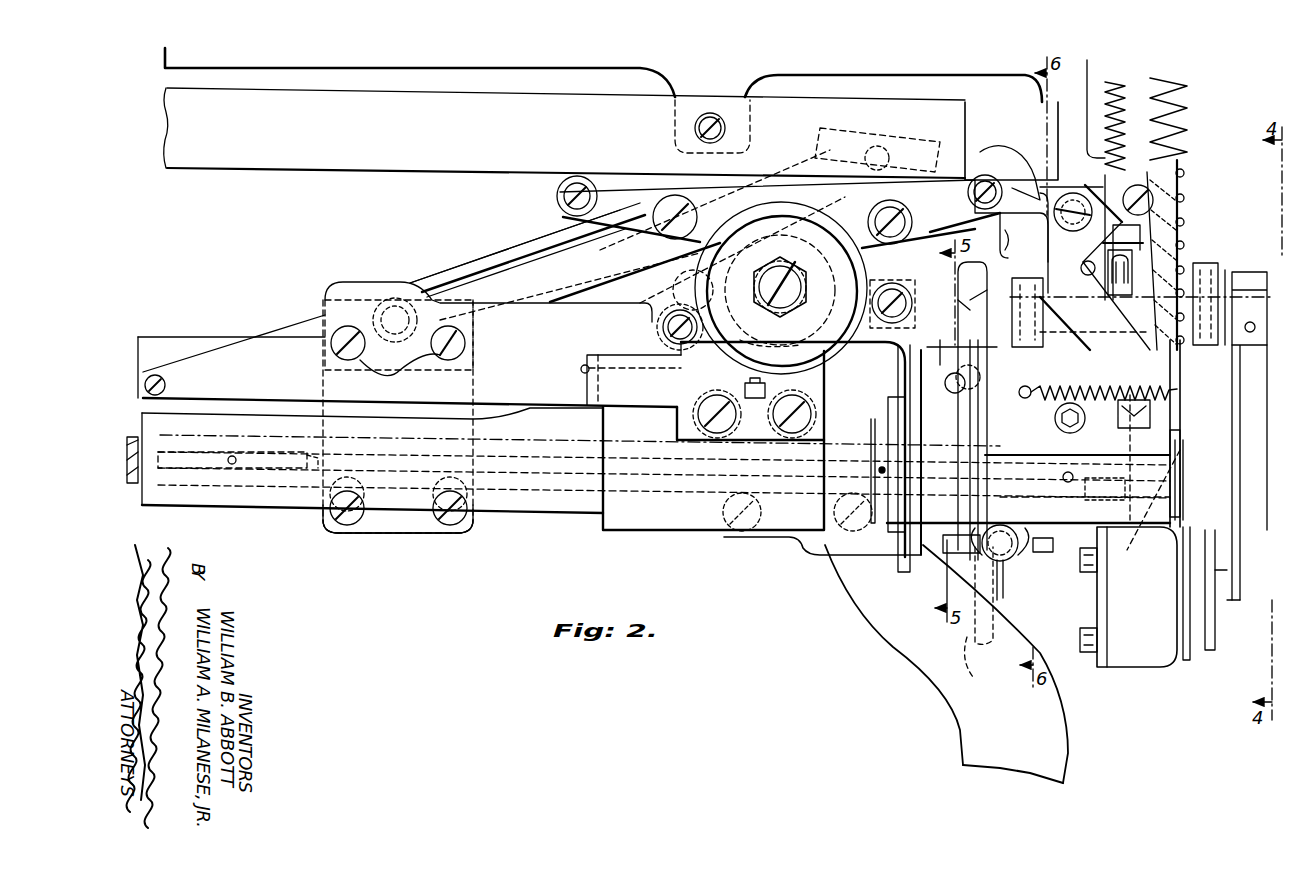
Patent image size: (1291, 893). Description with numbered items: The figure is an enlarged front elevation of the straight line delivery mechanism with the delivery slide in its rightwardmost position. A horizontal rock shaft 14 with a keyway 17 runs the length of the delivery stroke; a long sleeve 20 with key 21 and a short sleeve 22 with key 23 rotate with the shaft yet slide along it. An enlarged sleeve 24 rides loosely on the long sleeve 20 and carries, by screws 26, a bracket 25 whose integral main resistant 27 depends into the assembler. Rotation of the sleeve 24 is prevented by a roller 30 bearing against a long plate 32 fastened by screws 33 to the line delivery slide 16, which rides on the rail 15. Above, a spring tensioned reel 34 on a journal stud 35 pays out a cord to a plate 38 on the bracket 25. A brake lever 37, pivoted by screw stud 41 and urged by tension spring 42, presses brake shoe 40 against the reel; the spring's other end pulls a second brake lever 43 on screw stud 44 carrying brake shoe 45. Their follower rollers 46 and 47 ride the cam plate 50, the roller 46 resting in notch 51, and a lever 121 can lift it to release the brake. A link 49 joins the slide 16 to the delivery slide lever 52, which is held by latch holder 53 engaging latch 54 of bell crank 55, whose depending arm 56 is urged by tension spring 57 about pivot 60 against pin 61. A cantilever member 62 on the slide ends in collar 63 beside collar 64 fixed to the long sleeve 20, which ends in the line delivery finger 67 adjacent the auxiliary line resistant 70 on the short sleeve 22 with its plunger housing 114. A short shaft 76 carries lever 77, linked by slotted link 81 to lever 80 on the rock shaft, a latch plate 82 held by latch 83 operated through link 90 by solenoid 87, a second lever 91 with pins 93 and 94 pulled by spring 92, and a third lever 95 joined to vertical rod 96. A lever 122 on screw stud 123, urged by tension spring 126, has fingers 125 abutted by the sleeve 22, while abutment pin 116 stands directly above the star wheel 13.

The star wheel 13 is at (1006, 568).
The rock shaft 14 is at (142, 500).
The delivery slide rail 15 is at (188, 337).
The line delivery slide 16 is at (370, 280).
The keyway 17 is at (140, 433).
The long sleeve 20 is at (508, 505).
The key 21 is at (312, 475).
The short sleeve 22 is at (1067, 530).
The key 23 is at (1150, 530).
The enlarged sleeve 24 is at (686, 516).
The bracket 25 is at (652, 392).
The screws 26 is at (778, 430).
The main resistant 27 is at (905, 575).
The roller 30 is at (740, 392).
The long plate 32 is at (575, 333).
The screws 33 is at (430, 360).
The spring tensioned reel 34 is at (735, 220).
The journal stud 35 is at (771, 272).
The brake lever 37 is at (942, 190).
The plate 38 is at (592, 386).
The brake shoe 40 is at (662, 335).
The screw stud 41 is at (878, 213).
The tension spring 42 is at (824, 292).
The brake lever 43 is at (620, 203).
The screw stud 44 is at (553, 246).
The brake shoe 45 is at (912, 300).
The follower roller 46 is at (1006, 210).
The follower roller 47 is at (556, 195).
The link 49 is at (505, 268).
The cam plate 50 is at (384, 160).
The notch 51 is at (980, 175).
The delivery slide lever 52 is at (1055, 727).
The latch holder 53 is at (1017, 244).
The latch 54 is at (968, 145).
The bell crank 55 is at (1087, 190).
The depending arm 56 is at (1083, 320).
The tension spring 57 is at (1115, 88).
The pivot 60 is at (1067, 227).
The pin 61 is at (1081, 268).
The cantilever member 62 is at (818, 547).
The collar 63 is at (892, 537).
The collar 64 is at (877, 437).
The line delivery finger 67 is at (968, 345).
The auxiliary line resistant 70 is at (988, 345).
The short shaft 76 is at (1226, 275).
The lever 77 is at (1252, 272).
The lever 80 is at (1240, 590).
The slotted link 81 is at (1240, 575).
The latch plate 82 is at (1207, 262).
The latch 83 is at (1243, 385).
The solenoid 87 is at (1145, 667).
The link 90 is at (1188, 660).
The second lever 91 is at (1125, 312).
The spring 92 is at (1186, 86).
The pin 93 is at (1140, 368).
The pin 94 is at (1112, 276).
The third lever 95 is at (1025, 280).
The vertical rod 96 is at (981, 618).
The housing 114 is at (1135, 428).
The abutment pin 116 is at (952, 393).
The lever 121 is at (1010, 165).
The lever 122 is at (1185, 215).
The screw stud 123 is at (1160, 195).
The fingers 125 is at (1165, 530).
The tension spring 126 is at (1052, 412).